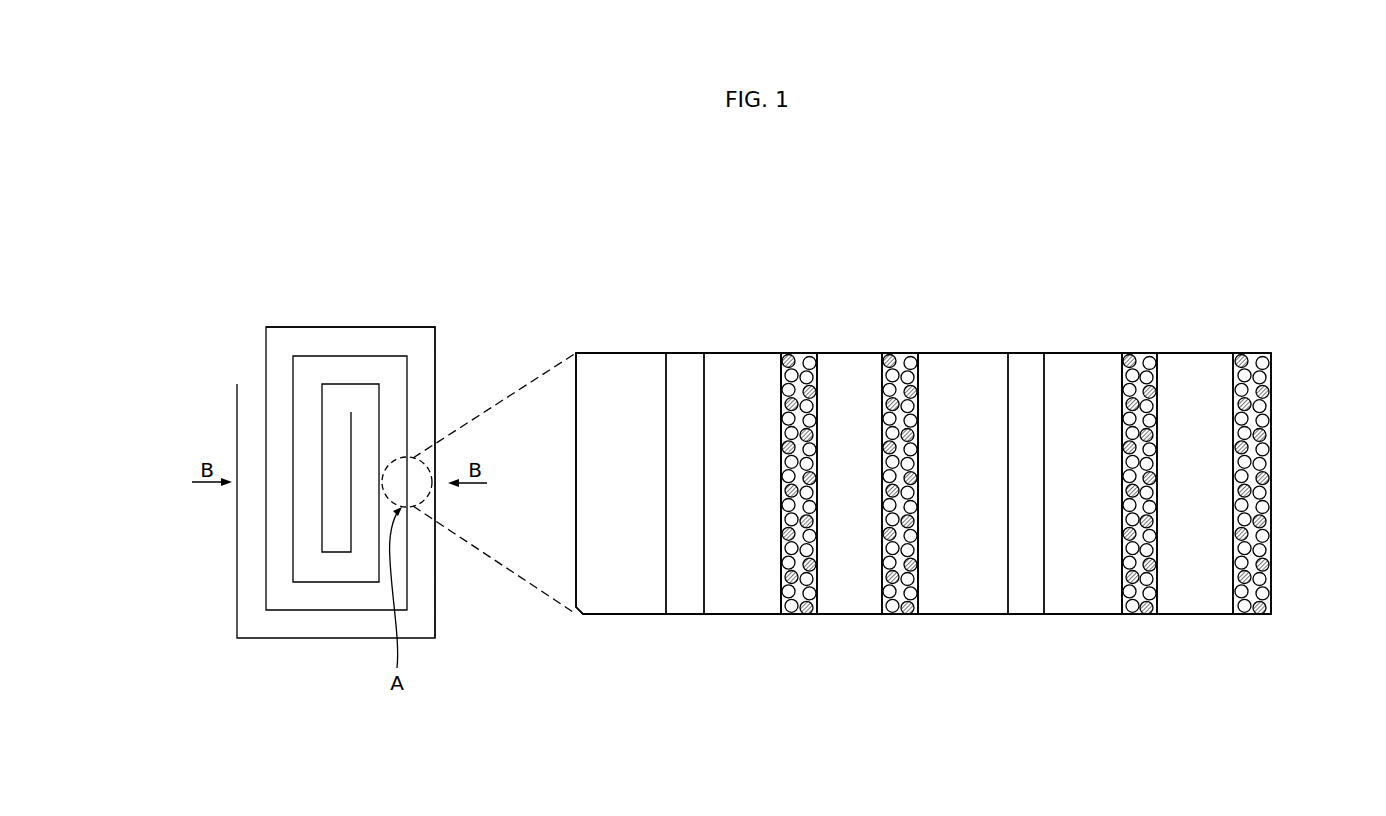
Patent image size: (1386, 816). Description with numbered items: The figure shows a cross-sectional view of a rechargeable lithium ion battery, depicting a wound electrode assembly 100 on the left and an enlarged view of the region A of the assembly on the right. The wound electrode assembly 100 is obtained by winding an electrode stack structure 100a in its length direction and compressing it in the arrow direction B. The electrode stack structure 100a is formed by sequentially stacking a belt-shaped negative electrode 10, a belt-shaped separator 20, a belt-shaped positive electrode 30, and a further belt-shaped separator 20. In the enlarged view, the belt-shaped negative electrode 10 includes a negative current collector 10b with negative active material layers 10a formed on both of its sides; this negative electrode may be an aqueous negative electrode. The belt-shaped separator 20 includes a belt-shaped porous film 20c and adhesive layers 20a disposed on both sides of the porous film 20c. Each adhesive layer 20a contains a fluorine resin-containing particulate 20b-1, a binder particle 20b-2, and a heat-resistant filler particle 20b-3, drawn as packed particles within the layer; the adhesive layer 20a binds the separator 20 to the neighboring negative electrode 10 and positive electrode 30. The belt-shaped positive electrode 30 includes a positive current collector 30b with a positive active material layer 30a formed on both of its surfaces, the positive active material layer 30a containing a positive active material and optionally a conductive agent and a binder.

The wound electrode assembly 100 is at (343, 275).
The electrode stack structure 100a is at (388, 327).
The belt-shaped negative electrode 10 is at (660, 252).
The negative active material layer 10a is at (618, 353).
The negative current collector 10b is at (686, 353).
The belt-shaped separator 20 is at (860, 252).
The adhesive layer 20a is at (801, 345).
The fluorine resin-containing particulate 20b-1 is at (809, 600).
The binder particle 20b-2 is at (790, 560).
The heat-resistant filler particle 20b-3 is at (781, 503).
The belt-shaped porous film 20c is at (850, 353).
The belt-shaped positive electrode 30 is at (1043, 252).
The positive active material layer 30a is at (965, 353).
The positive current collector 30b is at (1023, 353).